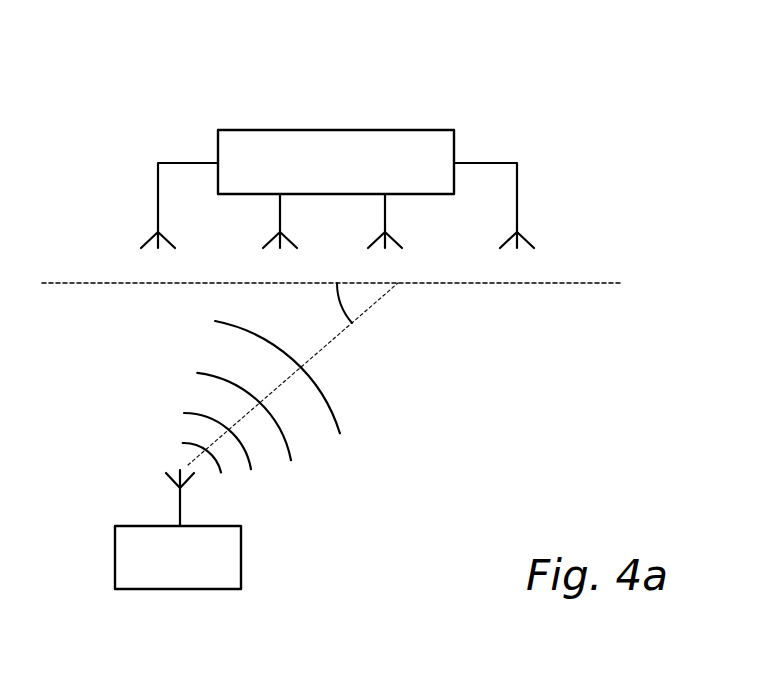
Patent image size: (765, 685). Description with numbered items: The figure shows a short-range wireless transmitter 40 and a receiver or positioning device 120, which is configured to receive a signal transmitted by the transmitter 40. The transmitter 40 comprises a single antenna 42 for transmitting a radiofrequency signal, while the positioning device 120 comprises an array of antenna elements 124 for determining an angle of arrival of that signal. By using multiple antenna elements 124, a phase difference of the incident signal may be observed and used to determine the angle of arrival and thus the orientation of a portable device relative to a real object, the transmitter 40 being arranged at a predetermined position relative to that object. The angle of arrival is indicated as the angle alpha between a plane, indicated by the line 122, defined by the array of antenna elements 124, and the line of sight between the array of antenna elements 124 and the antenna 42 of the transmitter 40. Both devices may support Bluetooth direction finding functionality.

The positioning device 120 is at (355, 130).
The antenna elements 124 is at (154, 234).
The line 122 is at (519, 284).
The short-range wireless transmitter 40 is at (241, 553).
The antenna 42 is at (168, 479).